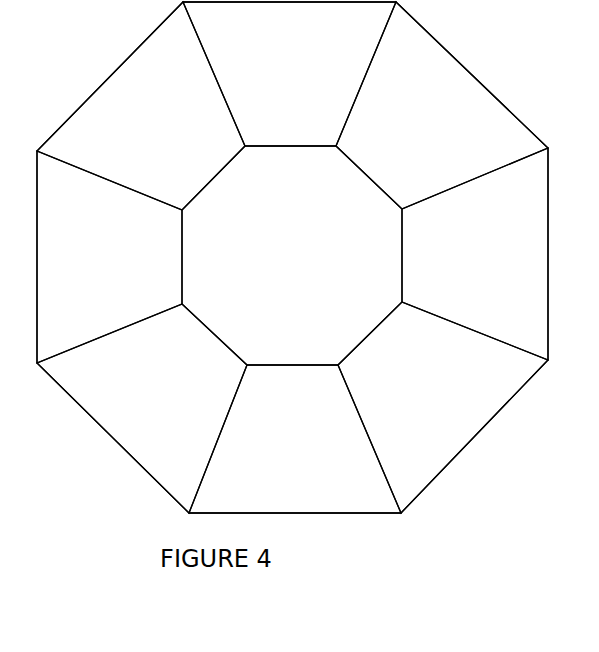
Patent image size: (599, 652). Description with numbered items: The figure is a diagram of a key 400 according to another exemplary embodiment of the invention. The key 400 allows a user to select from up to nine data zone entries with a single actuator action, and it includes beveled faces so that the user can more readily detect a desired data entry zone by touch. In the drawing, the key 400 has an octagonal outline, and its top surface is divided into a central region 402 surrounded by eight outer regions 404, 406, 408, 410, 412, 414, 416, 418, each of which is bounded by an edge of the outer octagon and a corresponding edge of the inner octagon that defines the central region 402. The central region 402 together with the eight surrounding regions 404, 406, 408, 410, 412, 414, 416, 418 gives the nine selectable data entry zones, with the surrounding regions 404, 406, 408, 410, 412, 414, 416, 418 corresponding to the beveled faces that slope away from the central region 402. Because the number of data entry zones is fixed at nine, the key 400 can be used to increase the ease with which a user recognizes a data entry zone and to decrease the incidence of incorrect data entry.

The key 400 is at (292, 294).
The central octagonal region 402 is at (292, 255).
The left peripheral segment 404 is at (109, 257).
The upper-left peripheral segment 406 is at (141, 106).
The top peripheral segment 408 is at (289, 74).
The upper-right peripheral segment 410 is at (442, 105).
The right peripheral segment 412 is at (475, 254).
The lower-right peripheral segment 414 is at (443, 407).
The bottom peripheral segment 416 is at (295, 439).
The lower-left peripheral segment 418 is at (142, 408).